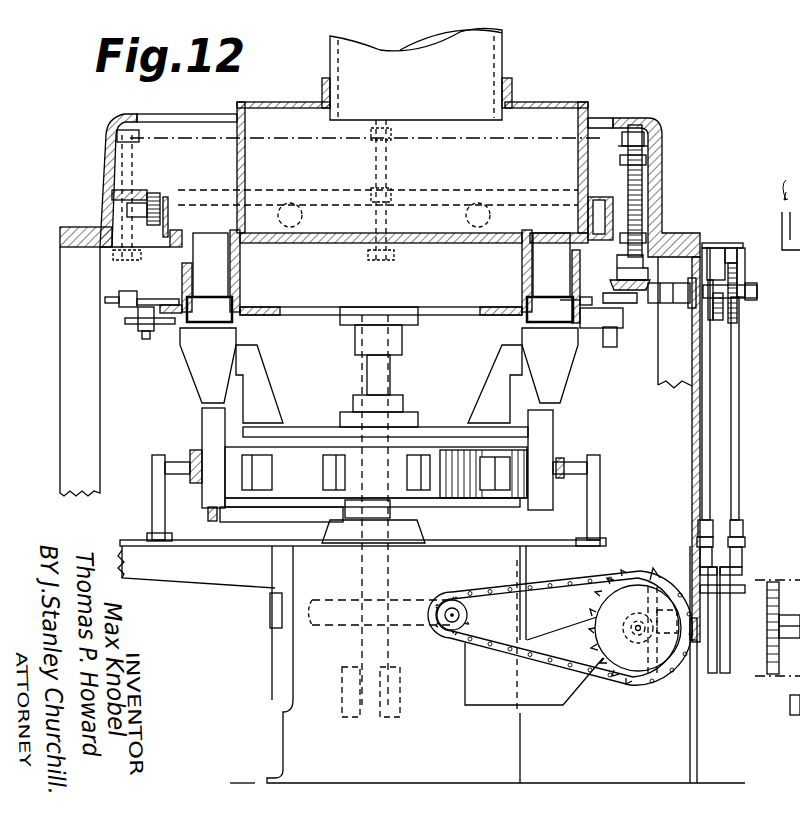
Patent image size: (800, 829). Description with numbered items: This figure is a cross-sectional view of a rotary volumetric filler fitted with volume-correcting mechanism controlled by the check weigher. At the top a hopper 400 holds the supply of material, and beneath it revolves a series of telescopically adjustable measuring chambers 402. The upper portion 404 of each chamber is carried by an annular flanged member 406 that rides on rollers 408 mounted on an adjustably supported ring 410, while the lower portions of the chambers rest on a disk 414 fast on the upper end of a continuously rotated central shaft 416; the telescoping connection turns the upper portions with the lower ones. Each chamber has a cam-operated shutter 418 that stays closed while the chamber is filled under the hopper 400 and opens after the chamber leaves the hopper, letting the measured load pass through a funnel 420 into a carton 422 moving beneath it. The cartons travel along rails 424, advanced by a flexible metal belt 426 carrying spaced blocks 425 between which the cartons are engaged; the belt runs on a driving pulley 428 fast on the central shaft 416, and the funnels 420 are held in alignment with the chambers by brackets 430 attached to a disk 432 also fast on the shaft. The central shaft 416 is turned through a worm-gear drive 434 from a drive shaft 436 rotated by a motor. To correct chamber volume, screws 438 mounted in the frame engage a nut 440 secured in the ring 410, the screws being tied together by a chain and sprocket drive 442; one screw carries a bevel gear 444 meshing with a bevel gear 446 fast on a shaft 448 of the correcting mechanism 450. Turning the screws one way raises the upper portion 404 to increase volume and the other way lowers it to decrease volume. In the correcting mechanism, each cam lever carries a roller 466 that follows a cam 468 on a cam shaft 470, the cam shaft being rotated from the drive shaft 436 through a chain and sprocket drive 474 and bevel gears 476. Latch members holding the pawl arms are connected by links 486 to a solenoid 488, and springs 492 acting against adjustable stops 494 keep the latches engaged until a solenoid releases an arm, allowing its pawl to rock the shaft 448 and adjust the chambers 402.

The hopper 400 is at (560, 100).
The measuring chambers 402 is at (535, 294).
The upper portion of the measuring chambers 404 is at (220, 255).
The annular flanged member 406 is at (163, 197).
The rollers 408 is at (150, 228).
The supporting ring 410 is at (150, 190).
The disk 414 is at (440, 313).
The central shaft 416 is at (386, 378).
The shutters 418 is at (590, 333).
The funnel 420 is at (205, 365).
The carton 422 is at (205, 432).
The rails 424 is at (207, 512).
The rollers 425 is at (328, 468).
The flexible metal belt 426 is at (442, 458).
The driving pulley 428 is at (228, 490).
The brackets 430 is at (262, 382).
The disk 432 is at (316, 425).
The worm-gear drive 434 is at (332, 622).
The drive shaft 436 is at (447, 626).
The screws 438 is at (643, 168).
The nut 440 is at (655, 207).
The chain and sprocket drive 442 is at (622, 127).
The bevel gear 444 is at (617, 268).
The bevel gear 446 is at (650, 294).
The shaft 448 is at (760, 308).
The correcting mechanism 450 is at (736, 232).
The roller 466 is at (713, 566).
The cams 468 is at (710, 674).
The cam shaft 470 is at (738, 630).
The chain and sprocket drive 474 is at (556, 668).
The bevel gears 476 is at (648, 684).
The links 486 is at (757, 292).
The solenoid 488 is at (745, 266).
The springs 492 is at (762, 298).
The adjustable stops 494 is at (781, 282).